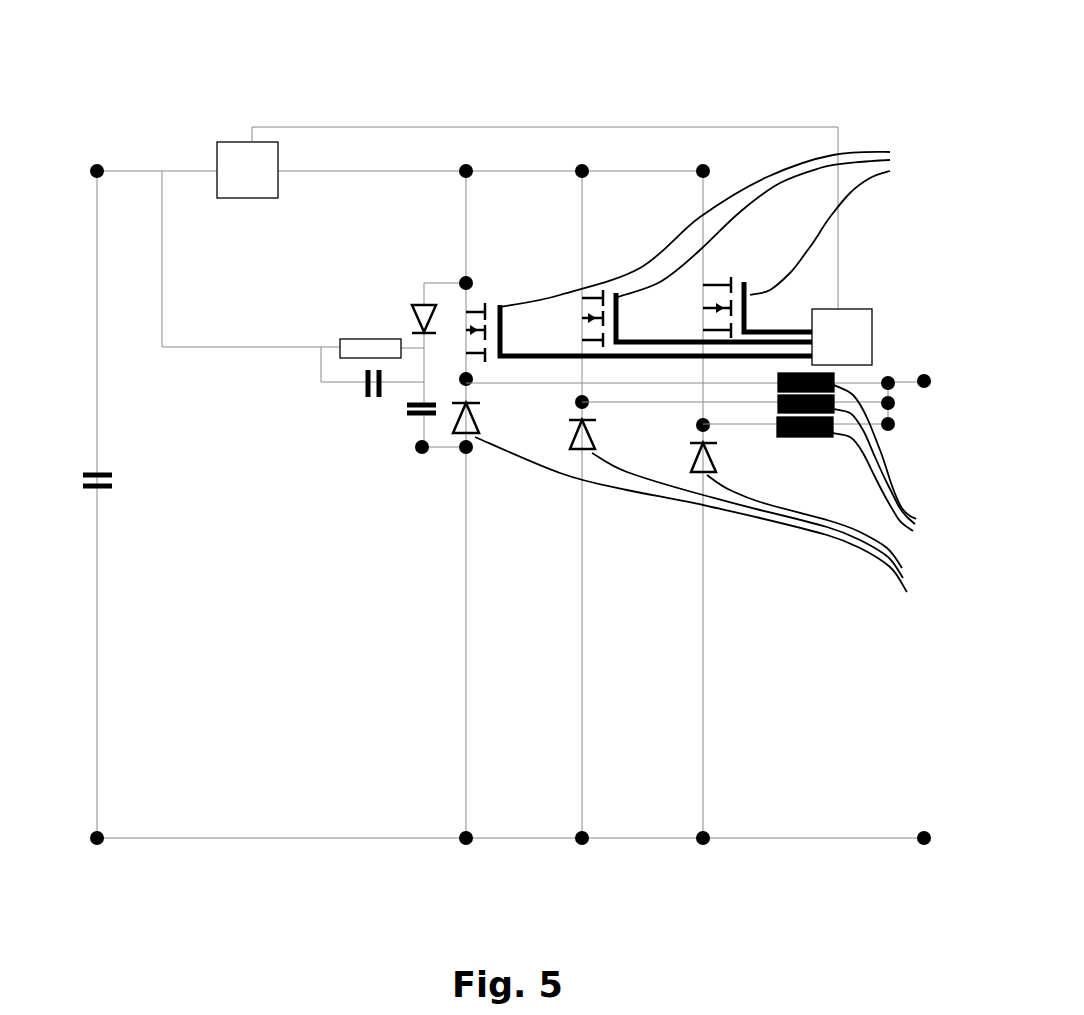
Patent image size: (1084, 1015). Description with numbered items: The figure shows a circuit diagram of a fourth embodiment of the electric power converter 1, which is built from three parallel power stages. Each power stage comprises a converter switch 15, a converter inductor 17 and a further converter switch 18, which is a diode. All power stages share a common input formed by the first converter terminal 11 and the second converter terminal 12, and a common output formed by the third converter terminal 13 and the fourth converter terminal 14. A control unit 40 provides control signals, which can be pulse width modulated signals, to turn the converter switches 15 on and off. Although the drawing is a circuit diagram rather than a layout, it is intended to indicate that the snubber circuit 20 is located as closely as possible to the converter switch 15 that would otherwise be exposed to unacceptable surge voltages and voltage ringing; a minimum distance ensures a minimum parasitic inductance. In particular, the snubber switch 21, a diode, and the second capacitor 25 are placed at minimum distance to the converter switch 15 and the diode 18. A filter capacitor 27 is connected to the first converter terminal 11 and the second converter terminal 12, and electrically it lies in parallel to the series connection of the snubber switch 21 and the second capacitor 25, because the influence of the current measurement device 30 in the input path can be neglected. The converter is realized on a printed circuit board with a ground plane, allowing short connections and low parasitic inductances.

The electric power converter 1 is at (308, 90).
The first converter terminal 11 is at (97, 164).
The second converter terminal 12 is at (95, 831).
The third converter terminal 13 is at (924, 388).
The fourth converter terminal 14 is at (922, 831).
The converter switch 15 is at (713, 225).
The converter inductor 17 is at (889, 461).
The further converter switch 18 is at (710, 519).
The snubber circuit 20 is at (360, 398).
The snubber switch 21 is at (418, 305).
The second capacitor 25 is at (412, 418).
The filter capacitor 27 is at (111, 490).
The current measurement device 30 is at (228, 141).
The control unit 40 is at (855, 308).